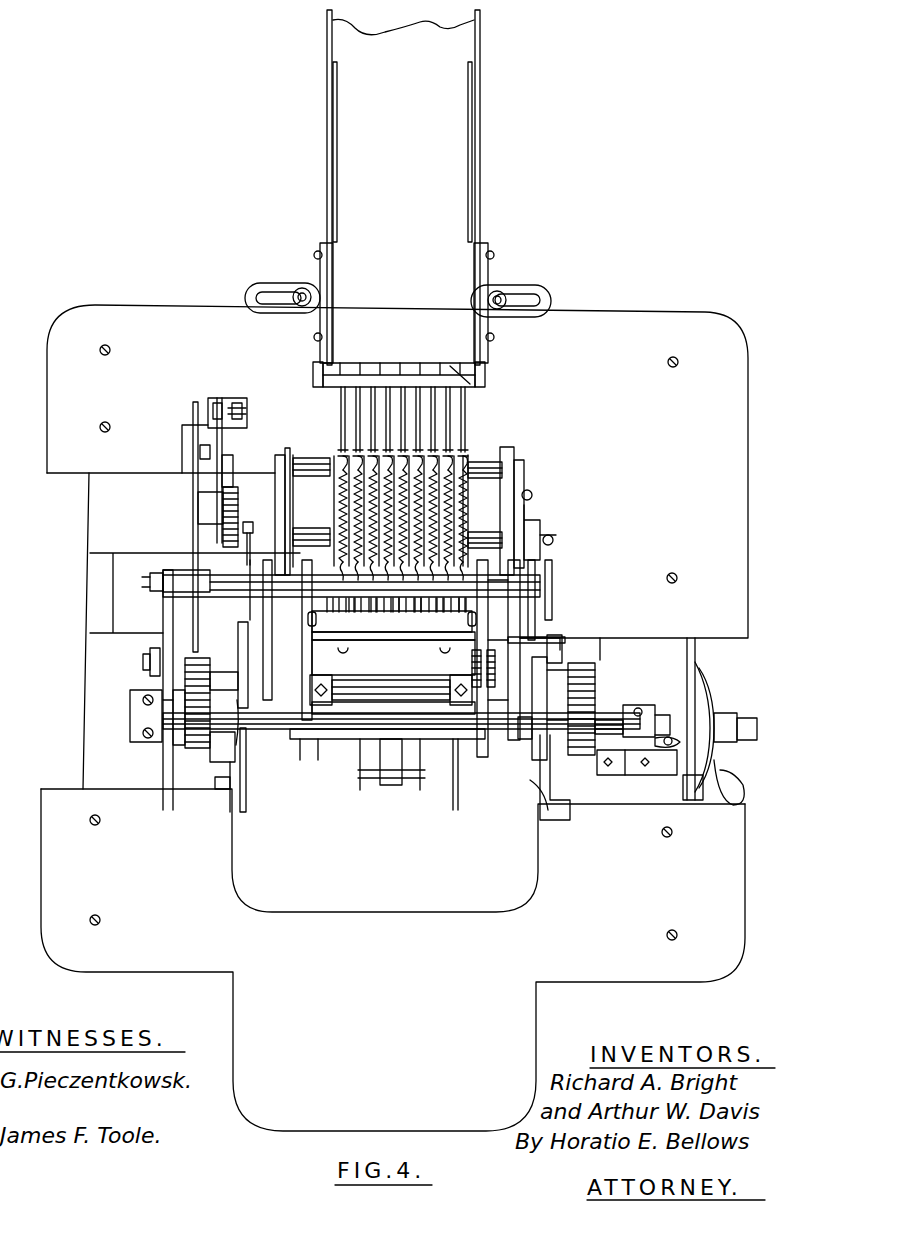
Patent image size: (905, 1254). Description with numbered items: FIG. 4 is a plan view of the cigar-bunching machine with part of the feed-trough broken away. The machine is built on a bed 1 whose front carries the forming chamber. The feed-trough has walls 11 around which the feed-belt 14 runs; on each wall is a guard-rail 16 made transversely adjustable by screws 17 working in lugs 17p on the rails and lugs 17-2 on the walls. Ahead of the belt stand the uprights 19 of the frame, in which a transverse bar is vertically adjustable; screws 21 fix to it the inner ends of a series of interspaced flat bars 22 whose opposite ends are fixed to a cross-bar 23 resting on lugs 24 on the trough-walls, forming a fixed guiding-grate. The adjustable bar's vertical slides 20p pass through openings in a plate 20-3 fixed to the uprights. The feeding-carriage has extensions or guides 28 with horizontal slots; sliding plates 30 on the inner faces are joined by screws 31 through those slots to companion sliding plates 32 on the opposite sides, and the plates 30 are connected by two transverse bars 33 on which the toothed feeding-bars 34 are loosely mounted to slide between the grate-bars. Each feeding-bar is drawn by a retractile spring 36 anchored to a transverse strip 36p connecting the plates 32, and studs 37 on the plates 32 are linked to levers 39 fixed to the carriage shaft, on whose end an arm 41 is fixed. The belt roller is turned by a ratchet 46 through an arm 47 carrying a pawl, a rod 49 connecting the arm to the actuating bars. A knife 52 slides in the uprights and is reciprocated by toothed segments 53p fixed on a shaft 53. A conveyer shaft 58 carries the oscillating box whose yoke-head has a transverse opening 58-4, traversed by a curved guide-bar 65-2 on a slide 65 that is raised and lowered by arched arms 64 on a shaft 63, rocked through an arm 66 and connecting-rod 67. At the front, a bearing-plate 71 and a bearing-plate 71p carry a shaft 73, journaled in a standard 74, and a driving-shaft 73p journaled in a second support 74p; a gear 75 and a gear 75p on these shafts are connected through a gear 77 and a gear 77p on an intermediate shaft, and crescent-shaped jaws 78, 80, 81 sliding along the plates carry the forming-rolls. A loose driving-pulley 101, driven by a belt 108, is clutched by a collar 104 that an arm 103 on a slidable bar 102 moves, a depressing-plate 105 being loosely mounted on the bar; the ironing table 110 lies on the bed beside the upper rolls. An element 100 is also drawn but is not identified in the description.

The bed 1 is at (638, 352).
The feed-trough walls 11 is at (327, 43).
The feed-belt 14 is at (425, 163).
The guard-rail 16 is at (335, 178).
The adjusting screws 17 is at (299, 306).
The rail lugs 17p is at (262, 290).
The wall lugs 17-2 is at (303, 290).
The screws 21 is at (345, 418).
The interspaced flat bars 22 is at (462, 423).
The cross-bar 23 is at (462, 372).
The lugs 24 is at (480, 376).
The extensions or guides 28 is at (512, 470).
The sliding plates 30 is at (285, 447).
The screws 31 is at (523, 495).
The companion sliding plates 32 is at (522, 512).
The transverse bars 33 is at (484, 468).
The feeding-bars 34 is at (348, 518).
The retractile spring 36 is at (345, 490).
The transverse strip 36p is at (465, 575).
The studs 37 is at (546, 535).
The levers 39 is at (265, 578).
The arm 41 is at (192, 483).
The ratchet 46 is at (226, 535).
The arm 47 is at (218, 408).
The rod 49 is at (236, 403).
The knife 52 is at (362, 690).
The shaft 53 is at (333, 752).
The toothed segments 53p is at (366, 640).
The shaft 58 is at (455, 752).
The transverse opening 58-4 is at (407, 760).
The shaft 63 is at (148, 584).
The arched arms 64 is at (300, 617).
The slide 65 is at (360, 760).
The curved guide-bar 65-2 is at (383, 777).
The arm 66 is at (165, 614).
The connecting-rod 67 is at (152, 670).
The bearing-plate 71 is at (232, 750).
The bearing-plate 71p is at (582, 785).
The shaft 73 is at (130, 722).
The driving-shaft 73p is at (645, 705).
The standard 74 is at (175, 738).
The second support 74p is at (608, 720).
The gear 75 is at (225, 750).
The gear 75p is at (585, 775).
The gear 77 is at (212, 658).
The gear 77p is at (583, 660).
The jaw 78 is at (248, 750).
The jaw 80 is at (527, 745).
The jaw 81 is at (575, 665).
The stop 100 is at (225, 792).
The driving-pulley 101 is at (716, 690).
The slidable bar 102 is at (552, 832).
The arm 103 is at (668, 790).
The collar 104 is at (703, 660).
The depressing-plate 105 is at (572, 775).
The belt 108 is at (712, 662).
The ironing table 110 is at (440, 900).
The uprights 19 is at (515, 630).
The vertical slides 20p is at (575, 580).
The plate 20-3 is at (392, 617).